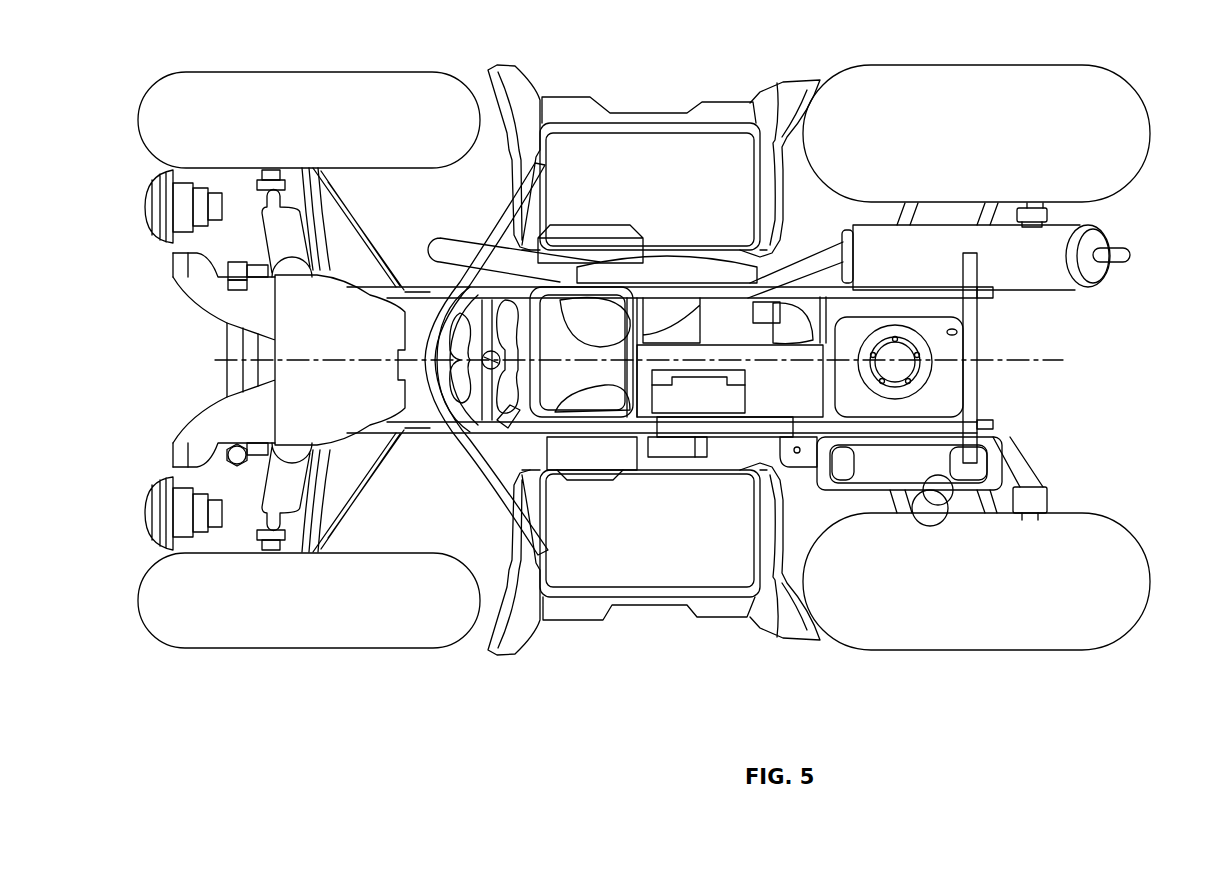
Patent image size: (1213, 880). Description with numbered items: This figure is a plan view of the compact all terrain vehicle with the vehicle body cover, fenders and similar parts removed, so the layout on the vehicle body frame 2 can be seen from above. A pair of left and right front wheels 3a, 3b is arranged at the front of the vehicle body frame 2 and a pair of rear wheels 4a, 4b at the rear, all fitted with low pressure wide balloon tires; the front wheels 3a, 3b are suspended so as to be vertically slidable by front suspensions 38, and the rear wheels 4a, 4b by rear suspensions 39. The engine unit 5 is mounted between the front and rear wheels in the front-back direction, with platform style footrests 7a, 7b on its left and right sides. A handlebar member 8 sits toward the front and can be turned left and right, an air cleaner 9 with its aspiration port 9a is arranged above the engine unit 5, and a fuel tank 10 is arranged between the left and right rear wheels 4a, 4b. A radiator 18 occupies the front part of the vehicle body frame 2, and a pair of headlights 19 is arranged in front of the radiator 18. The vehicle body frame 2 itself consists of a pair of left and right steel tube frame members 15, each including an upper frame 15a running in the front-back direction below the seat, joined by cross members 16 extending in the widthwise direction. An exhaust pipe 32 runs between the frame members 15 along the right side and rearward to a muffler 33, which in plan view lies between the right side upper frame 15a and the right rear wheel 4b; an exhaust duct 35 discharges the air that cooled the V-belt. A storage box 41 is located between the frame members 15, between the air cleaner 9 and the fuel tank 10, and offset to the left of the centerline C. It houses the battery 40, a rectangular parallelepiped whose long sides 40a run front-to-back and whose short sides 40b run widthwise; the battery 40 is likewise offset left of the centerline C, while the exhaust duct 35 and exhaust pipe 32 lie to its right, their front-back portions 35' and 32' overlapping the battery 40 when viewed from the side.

The vehicle body frame 2 is at (452, 278).
The left front wheel 3a is at (372, 648).
The right front wheel 3b is at (370, 72).
The left rear wheel 4a is at (1052, 652).
The right rear wheel 4b is at (1050, 65).
The engine unit 5 is at (645, 235).
The left footrest 7a is at (660, 578).
The right footrest 7b is at (660, 140).
The handlebar member 8 is at (520, 187).
The air cleaner 9 is at (525, 415).
The aspiration port 9a is at (503, 420).
The fuel tank 10 is at (880, 502).
The frame member 15 is at (404, 285).
The upper frame 15a is at (423, 290).
The cross member 16 is at (980, 318).
The radiator 18 is at (220, 360).
The headlight 19 is at (198, 180).
The exhaust pipe 32 is at (795, 240).
The part of the exhaust pipe extending in the front-back direction 32' is at (671, 269).
The muffler 33 is at (1058, 290).
The exhaust duct 35 is at (509, 229).
The part of the exhaust duct extending in the front-back direction 35' is at (765, 271).
The front suspension 38 is at (340, 203).
The rear suspension 39 is at (1053, 214).
The battery 40 is at (742, 407).
The long side of the battery 40a is at (690, 437).
The short side of the battery 40b is at (745, 385).
The storage box 41 is at (830, 402).
The centerline C is at (1048, 360).